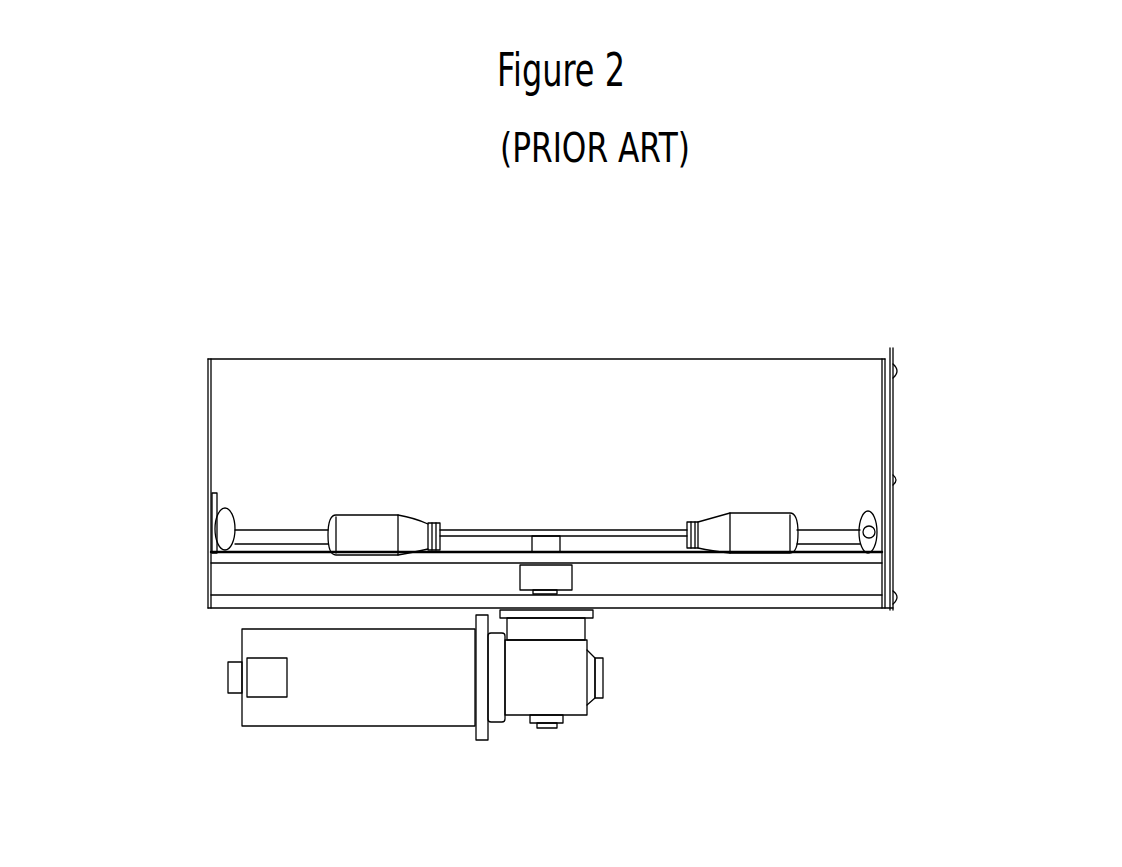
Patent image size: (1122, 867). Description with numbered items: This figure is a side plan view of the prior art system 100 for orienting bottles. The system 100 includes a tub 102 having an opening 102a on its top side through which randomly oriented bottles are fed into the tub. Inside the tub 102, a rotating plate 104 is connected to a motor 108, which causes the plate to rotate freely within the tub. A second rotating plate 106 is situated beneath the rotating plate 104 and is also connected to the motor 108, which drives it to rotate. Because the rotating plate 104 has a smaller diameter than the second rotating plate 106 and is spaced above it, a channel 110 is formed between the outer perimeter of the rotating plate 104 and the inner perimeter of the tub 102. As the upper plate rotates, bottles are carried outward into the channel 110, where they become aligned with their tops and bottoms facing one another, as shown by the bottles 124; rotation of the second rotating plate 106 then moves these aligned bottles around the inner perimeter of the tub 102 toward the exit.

The system 100 is at (152, 291).
The tub 102 is at (207, 449).
The opening 102a is at (330, 348).
The rotating plate 104 is at (843, 532).
The second rotating plate 106 is at (868, 565).
The motor 108 is at (387, 726).
The channel 110 is at (876, 530).
The bottles 124 is at (783, 520).